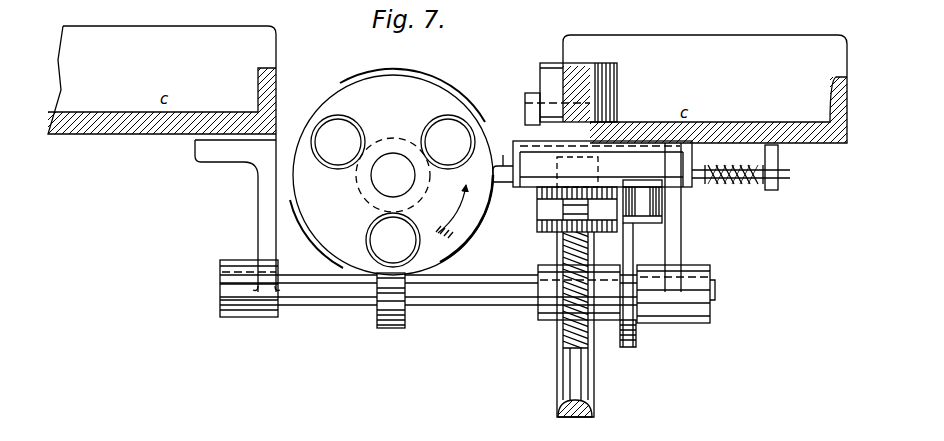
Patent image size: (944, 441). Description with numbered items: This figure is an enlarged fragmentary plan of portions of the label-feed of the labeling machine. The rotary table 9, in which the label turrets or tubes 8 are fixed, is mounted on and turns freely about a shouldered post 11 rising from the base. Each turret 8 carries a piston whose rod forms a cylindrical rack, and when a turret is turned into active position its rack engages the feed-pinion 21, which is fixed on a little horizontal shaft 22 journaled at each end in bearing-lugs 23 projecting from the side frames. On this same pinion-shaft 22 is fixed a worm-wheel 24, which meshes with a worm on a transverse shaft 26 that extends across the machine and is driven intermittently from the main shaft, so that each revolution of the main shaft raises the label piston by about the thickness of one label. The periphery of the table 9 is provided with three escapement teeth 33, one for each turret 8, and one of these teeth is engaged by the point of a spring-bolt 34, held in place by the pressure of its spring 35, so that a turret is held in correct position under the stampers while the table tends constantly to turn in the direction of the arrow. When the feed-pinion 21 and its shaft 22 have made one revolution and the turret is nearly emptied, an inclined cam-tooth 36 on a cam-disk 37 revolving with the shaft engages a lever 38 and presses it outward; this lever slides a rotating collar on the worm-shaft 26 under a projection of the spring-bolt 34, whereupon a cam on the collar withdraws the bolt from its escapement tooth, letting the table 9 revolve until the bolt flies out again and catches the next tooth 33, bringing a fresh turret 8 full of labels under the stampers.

The holes in disk 8 is at (393, 191).
The rotary table 9 is at (393, 175).
The shouldered post 11 is at (393, 175).
The feed-pinion 21 is at (390, 305).
The horizontal shaft 22 is at (467, 290).
The bearing-lugs 23 is at (465, 301).
The worm-wheel 24 is at (574, 282).
The transverse shaft 26 is at (575, 380).
The escapement teeth 33 is at (391, 168).
The spring-bolt 34 is at (503, 153).
The spring 35 is at (731, 191).
The cam-tooth 36 is at (572, 207).
The cam-disk 37 is at (628, 349).
The lever 38 is at (632, 224).